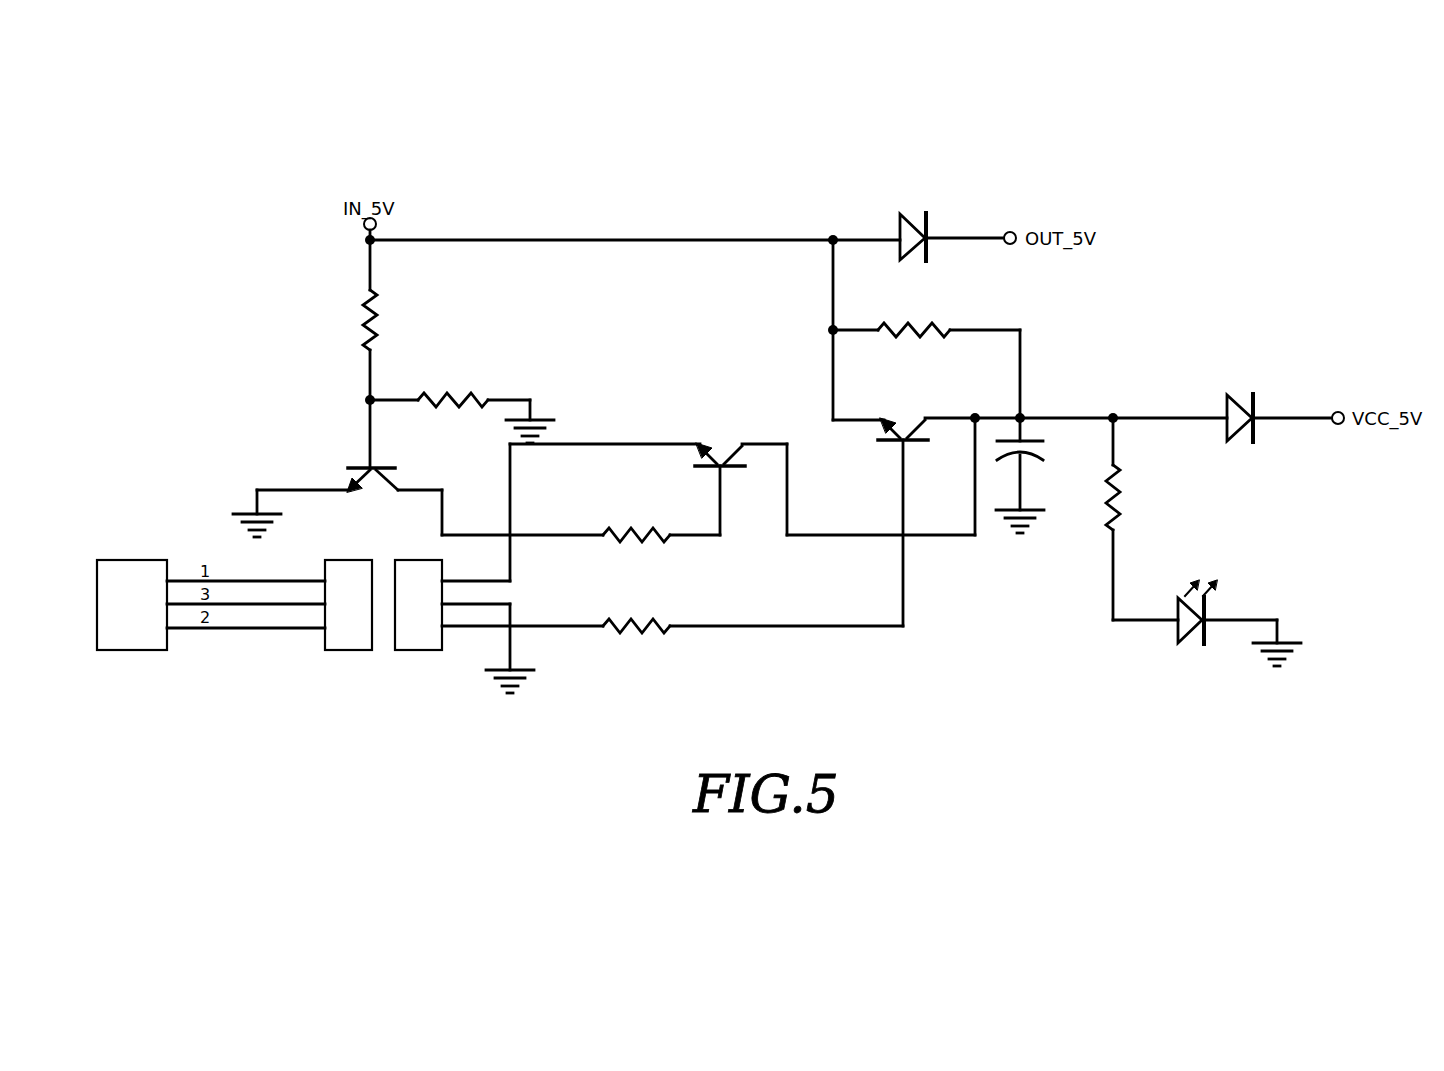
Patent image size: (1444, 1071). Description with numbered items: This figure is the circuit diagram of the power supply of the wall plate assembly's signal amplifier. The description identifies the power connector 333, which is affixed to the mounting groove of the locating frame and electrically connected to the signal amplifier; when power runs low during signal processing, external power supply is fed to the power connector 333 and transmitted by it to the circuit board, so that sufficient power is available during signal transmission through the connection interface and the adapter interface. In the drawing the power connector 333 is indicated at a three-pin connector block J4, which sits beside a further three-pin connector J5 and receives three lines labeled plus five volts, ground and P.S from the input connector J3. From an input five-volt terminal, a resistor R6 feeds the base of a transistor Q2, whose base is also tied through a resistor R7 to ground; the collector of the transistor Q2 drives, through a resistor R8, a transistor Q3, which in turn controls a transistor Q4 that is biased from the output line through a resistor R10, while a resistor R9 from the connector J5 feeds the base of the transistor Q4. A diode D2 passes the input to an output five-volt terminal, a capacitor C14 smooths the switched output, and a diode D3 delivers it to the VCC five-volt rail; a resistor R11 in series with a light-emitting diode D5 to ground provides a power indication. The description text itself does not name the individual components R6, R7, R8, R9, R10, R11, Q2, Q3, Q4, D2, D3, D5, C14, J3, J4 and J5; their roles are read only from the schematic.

The power connector 333 is at (313, 616).
The resistor R6 is at (387, 319).
The resistor R7 is at (452, 399).
The resistor R8 is at (636, 534).
The resistor R9 is at (636, 625).
The resistor R10 is at (913, 329).
The resistor R11 is at (1137, 497).
The transistor Q2 is at (418, 459).
The transistor Q3 is at (740, 433).
The transistor Q4 is at (927, 407).
The diode D2 is at (909, 238).
The diode D3 is at (1239, 418).
The light emitting diode D5 is at (1188, 612).
The capacitor C14 is at (1045, 462).
The connector J3 is at (131, 604).
The connector J4 is at (348, 604).
The connector J5 is at (418, 604).